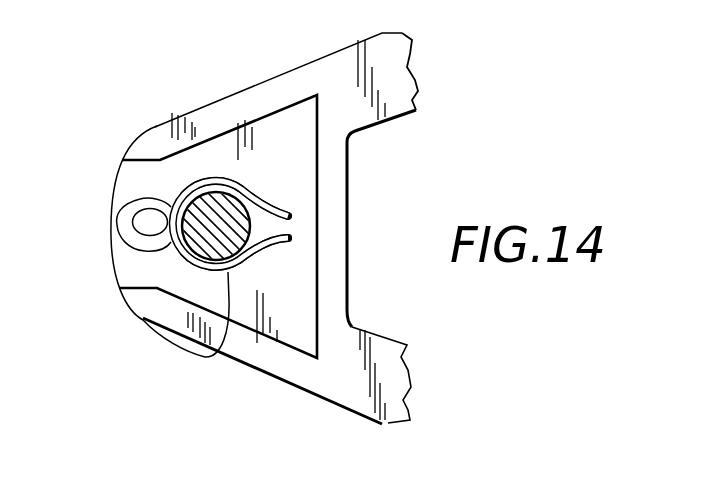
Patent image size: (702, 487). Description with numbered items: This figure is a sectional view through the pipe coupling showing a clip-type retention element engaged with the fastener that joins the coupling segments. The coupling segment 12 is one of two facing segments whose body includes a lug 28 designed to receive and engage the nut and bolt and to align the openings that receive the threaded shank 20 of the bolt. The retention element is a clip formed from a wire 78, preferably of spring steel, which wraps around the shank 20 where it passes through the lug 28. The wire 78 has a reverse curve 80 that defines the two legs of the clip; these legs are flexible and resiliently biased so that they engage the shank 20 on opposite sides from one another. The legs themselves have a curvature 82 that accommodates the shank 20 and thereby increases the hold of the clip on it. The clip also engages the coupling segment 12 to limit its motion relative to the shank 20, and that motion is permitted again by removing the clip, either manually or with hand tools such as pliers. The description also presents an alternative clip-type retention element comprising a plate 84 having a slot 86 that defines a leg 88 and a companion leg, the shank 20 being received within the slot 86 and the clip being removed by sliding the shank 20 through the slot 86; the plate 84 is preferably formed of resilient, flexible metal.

The coupling segment 12 is at (402, 50).
The threaded shank 20 is at (216, 245).
The lug 28 is at (293, 368).
The wire 78 is at (186, 256).
The reverse curve 80 is at (231, 180).
The curvature 82 is at (215, 353).
The plate 84 is at (281, 207).
The slot 86 is at (121, 214).
The leg 88 is at (200, 180).